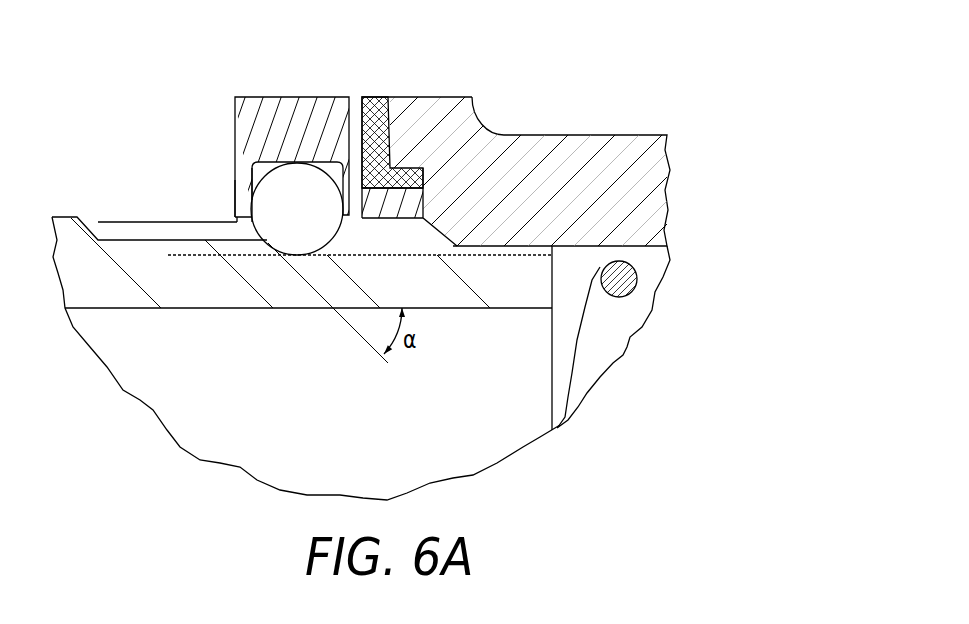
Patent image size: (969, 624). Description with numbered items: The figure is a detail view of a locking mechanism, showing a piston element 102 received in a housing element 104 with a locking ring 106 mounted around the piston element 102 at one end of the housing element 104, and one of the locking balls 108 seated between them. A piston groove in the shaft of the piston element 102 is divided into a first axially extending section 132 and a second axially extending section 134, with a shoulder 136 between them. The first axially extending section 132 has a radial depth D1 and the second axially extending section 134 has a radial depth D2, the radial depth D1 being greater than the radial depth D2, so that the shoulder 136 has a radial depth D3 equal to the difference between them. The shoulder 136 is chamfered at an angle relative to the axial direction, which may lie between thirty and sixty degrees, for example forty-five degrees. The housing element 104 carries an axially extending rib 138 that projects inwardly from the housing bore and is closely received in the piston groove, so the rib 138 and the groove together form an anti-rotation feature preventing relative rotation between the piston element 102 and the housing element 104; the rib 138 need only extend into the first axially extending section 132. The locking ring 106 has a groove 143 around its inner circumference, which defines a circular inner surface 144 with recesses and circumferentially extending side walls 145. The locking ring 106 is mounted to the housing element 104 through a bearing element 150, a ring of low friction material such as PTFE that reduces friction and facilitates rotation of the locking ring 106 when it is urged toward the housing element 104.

The piston element 102 is at (507, 297).
The housing element 104 is at (623, 143).
The locking ring 106 is at (308, 107).
The locking ball 108 is at (297, 240).
The first axially extending section 132 is at (420, 243).
The second axially extending section 134 is at (153, 227).
The shoulder 136 is at (262, 308).
The axially extending rib 138 is at (640, 248).
The groove 143 is at (258, 172).
The circular inner surface 144 is at (280, 172).
The circumferentially extending side walls 145 is at (240, 187).
The bearing element 150 is at (375, 103).
The radial depth of first axially extending section D1 is at (351, 255).
The radial depth of second axially extending section D2 is at (110, 241).
The radial depth of shoulder D3 is at (177, 200).